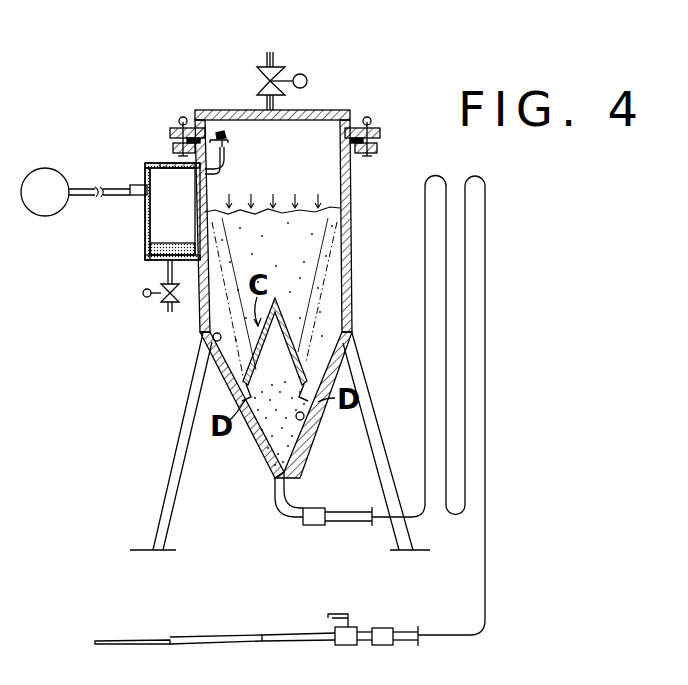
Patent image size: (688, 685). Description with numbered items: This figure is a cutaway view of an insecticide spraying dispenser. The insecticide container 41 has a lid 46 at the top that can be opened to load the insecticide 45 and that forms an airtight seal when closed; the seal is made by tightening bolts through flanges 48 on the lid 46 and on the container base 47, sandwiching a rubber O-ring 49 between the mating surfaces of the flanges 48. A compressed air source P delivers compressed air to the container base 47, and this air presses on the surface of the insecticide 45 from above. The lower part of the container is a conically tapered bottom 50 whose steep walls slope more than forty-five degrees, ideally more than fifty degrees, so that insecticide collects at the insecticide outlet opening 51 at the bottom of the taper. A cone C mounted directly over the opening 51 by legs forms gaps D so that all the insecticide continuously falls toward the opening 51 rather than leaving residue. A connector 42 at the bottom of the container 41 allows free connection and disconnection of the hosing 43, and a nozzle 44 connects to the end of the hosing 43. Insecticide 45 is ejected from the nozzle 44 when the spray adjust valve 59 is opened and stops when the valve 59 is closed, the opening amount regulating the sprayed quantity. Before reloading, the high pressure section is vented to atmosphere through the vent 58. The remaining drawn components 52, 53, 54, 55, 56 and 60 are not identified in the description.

The insecticide container 41 is at (280, 305).
The connector 42 is at (313, 527).
The hosing 43 is at (485, 373).
The nozzle 44 is at (284, 641).
The insecticide 45 is at (318, 259).
The lid 46 is at (345, 110).
The container base 47 is at (352, 283).
The flanges 48 is at (370, 127).
The rubber O-ring 49 is at (170, 143).
The conically tapered bottom 50 is at (213, 340).
The insecticide outlet opening 51 is at (287, 466).
The air chamber 52 is at (148, 205).
The air pipe 53 is at (223, 162).
The drain valve 54 is at (164, 306).
The filter 55 is at (150, 256).
The nozzle 56 is at (230, 132).
The vent 58 is at (280, 62).
The spray adjust valve 59 is at (345, 626).
The coupling 60 is at (390, 645).